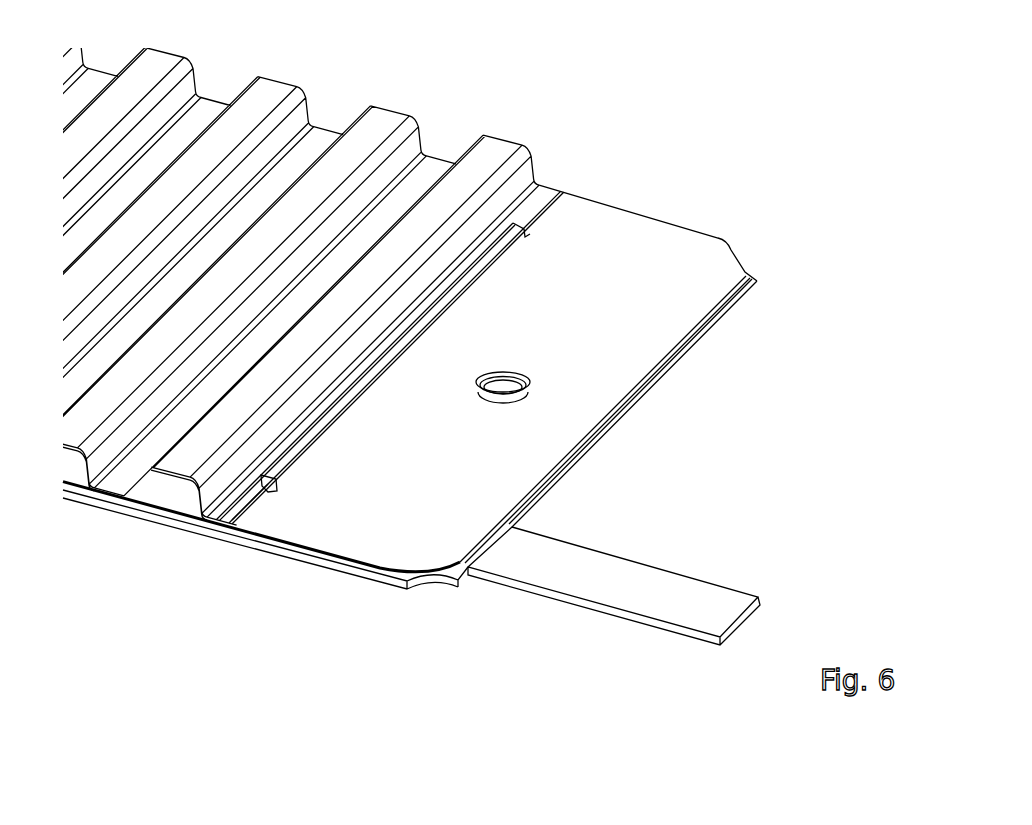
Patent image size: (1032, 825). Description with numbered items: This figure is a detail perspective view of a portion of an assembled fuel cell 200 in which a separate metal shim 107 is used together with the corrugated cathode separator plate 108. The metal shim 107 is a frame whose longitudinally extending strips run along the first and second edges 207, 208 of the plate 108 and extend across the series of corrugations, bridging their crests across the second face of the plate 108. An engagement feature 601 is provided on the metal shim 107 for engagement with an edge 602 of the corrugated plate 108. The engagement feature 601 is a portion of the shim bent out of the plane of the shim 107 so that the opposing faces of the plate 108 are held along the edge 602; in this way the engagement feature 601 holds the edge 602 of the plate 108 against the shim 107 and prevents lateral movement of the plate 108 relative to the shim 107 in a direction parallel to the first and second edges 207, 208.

The cathode separator plate 108 is at (531, 152).
The metal shim 107 is at (693, 240).
The first edge 207 is at (208, 520).
The second edge 208 is at (550, 188).
The engagement feature 601 is at (276, 477).
The edge 602 is at (250, 503).
The fuel cell assembly 200 is at (795, 146).